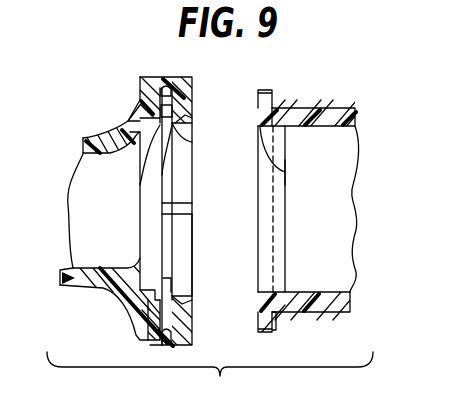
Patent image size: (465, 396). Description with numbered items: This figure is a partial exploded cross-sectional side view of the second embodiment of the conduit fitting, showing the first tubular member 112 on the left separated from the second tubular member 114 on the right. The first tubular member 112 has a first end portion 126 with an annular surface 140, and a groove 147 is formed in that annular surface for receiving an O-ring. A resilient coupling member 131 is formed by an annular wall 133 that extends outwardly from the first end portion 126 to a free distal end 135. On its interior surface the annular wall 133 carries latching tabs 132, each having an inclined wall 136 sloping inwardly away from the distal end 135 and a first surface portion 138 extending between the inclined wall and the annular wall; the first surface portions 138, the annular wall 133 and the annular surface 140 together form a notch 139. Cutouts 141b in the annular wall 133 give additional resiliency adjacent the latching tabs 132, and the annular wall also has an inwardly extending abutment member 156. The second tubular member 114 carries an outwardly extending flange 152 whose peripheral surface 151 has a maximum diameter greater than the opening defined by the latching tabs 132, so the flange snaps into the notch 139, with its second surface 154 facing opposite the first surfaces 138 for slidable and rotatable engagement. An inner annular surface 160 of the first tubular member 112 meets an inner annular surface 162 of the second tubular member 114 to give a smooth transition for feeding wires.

The first tubular member 112 is at (80, 147).
The second tubular member 114 is at (358, 118).
The first end portion 126 is at (136, 91).
The resilient coupling member 131 is at (198, 87).
The latching tabs 132 is at (186, 120).
The annular wall 133 is at (192, 343).
The free distal end 135 is at (192, 250).
The inclined wall 136 is at (192, 142).
The first surface portion 138 is at (172, 160).
The notch 139 is at (168, 282).
The annular surface 140 is at (163, 228).
The cutouts 141b is at (166, 86).
The groove 147 is at (133, 118).
The peripheral surface 151 is at (265, 90).
The flange 152 is at (274, 330).
The second surface 154 is at (278, 105).
The abutment member 156 is at (175, 203).
The inner annular surface 160 is at (140, 167).
The inner annular surface 162 is at (285, 170).